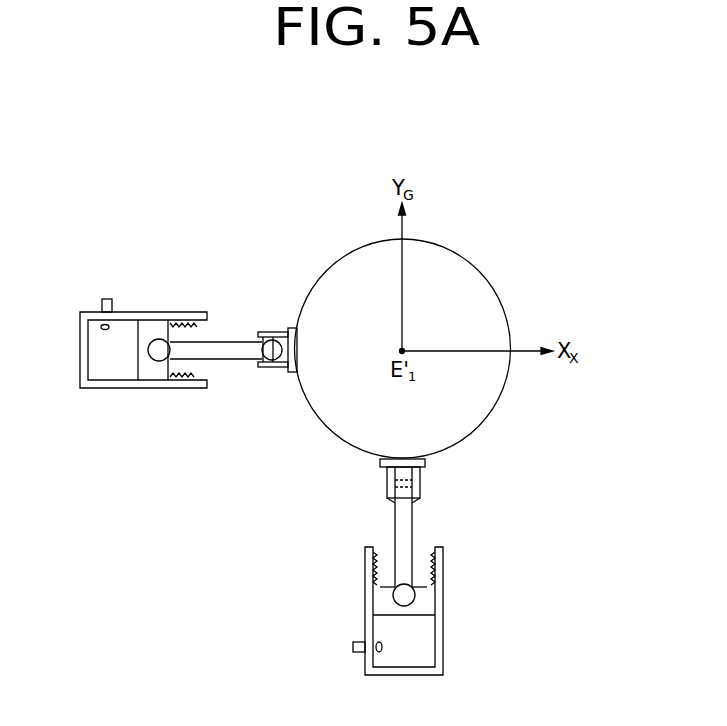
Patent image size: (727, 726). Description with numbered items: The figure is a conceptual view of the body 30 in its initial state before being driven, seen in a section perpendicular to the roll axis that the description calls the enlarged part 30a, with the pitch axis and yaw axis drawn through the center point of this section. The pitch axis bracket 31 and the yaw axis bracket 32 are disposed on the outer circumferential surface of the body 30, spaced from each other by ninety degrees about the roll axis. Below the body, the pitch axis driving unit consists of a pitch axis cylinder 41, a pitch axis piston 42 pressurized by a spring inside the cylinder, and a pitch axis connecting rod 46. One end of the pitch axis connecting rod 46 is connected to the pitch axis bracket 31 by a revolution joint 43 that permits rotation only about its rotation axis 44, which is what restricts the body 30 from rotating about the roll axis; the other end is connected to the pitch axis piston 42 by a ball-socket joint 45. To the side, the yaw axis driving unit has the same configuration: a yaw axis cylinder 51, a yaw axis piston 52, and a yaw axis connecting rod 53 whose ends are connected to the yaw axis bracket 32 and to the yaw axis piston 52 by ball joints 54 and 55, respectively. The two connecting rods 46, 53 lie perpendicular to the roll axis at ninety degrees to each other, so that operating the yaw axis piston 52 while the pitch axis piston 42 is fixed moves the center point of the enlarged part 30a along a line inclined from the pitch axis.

The body 30 is at (457, 250).
The enlarged part 30a is at (367, 258).
The pitch axis bracket 31 is at (385, 471).
The yaw axis bracket 32 is at (256, 342).
The pitch axis cylinder 41 is at (440, 643).
The pitch axis piston 42 is at (422, 607).
The revolution joint 43 is at (420, 495).
The rotation axis 44 is at (420, 470).
The ball-socket joint 45 is at (412, 595).
The pitch axis connecting rod 46 is at (398, 525).
The yaw axis cylinder 51 is at (111, 390).
The yaw axis piston 52 is at (157, 382).
The yaw axis connecting rod 53 is at (217, 347).
The ball joint 54 is at (284, 330).
The ball joint 55 is at (152, 337).